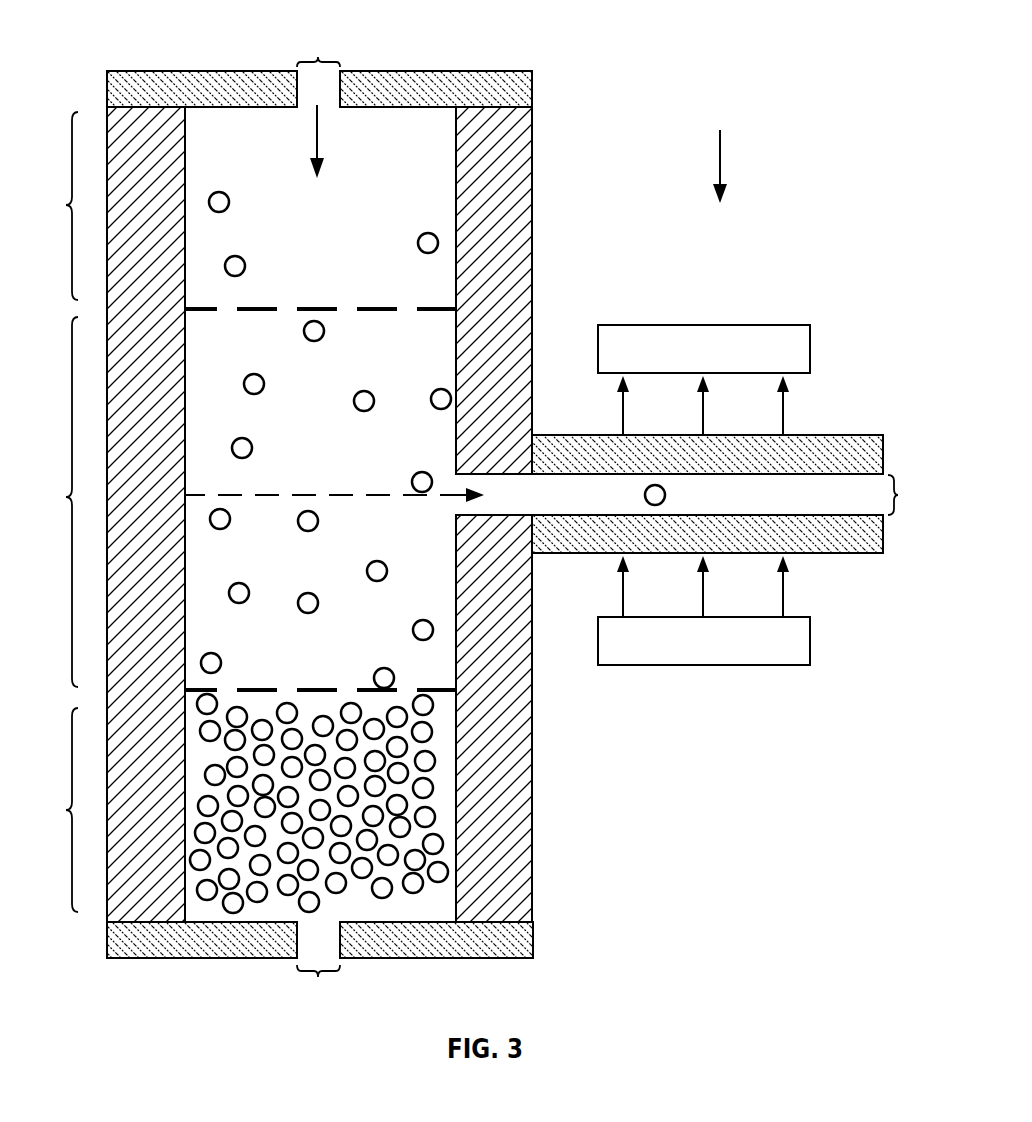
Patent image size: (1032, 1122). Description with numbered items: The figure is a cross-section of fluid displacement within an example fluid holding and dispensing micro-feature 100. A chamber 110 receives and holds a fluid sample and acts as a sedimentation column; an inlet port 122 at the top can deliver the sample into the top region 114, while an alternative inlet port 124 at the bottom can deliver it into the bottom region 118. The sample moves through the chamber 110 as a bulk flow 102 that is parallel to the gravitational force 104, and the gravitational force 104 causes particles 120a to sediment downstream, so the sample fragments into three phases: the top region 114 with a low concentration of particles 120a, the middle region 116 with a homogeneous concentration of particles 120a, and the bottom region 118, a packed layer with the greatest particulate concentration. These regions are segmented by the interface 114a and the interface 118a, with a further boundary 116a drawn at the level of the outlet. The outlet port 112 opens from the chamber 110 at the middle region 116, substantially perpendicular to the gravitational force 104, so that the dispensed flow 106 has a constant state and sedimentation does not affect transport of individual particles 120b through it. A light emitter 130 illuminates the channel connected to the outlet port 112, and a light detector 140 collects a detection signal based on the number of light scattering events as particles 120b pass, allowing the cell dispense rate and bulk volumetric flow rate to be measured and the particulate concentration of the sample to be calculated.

The fluid holding and dispensing micro-feature 100 is at (842, 50).
The bulk flow 102 is at (316, 119).
The gravitational force 104 is at (720, 131).
The flow 106 is at (483, 490).
The chamber 110 is at (456, 172).
The outlet port 112 is at (912, 495).
The top region 114 is at (229, 206).
The interface 114a is at (313, 307).
The middle region 116 is at (234, 502).
The second boundary 116a is at (310, 493).
The bottom region 118 is at (233, 803).
The interface 118a is at (312, 688).
The particles 120a is at (219, 192).
The particles 120b is at (665, 495).
The inlet port 122 is at (318, 49).
The inlet port 124 is at (318, 985).
The light emitter 130 is at (810, 640).
The light detector 140 is at (810, 342).